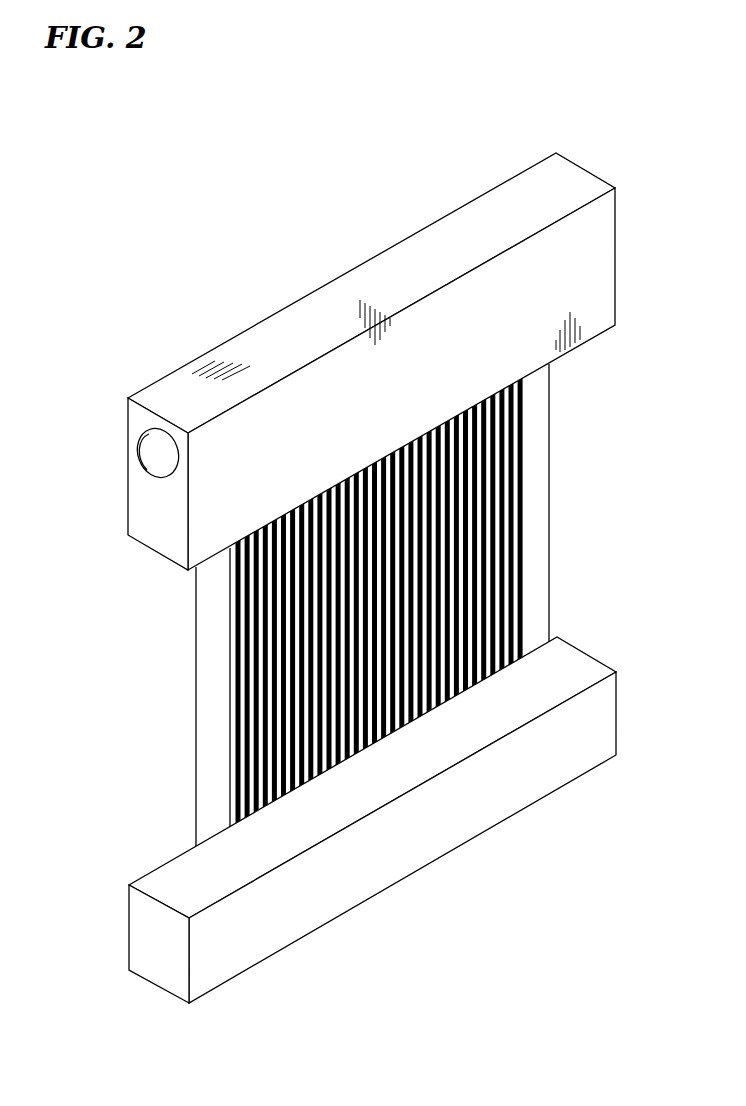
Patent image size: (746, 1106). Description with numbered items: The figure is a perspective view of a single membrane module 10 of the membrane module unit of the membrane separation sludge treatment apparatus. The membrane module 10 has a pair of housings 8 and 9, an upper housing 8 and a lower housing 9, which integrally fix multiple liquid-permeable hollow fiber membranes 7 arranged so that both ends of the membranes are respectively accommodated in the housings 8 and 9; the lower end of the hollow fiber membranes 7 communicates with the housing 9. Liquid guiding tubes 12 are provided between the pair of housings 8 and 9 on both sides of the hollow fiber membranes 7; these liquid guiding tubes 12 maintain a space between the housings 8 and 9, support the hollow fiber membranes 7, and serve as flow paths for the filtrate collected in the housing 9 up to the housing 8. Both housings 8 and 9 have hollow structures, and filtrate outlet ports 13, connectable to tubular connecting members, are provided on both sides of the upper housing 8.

The membrane module 10 is at (614, 134).
The housing 8 is at (605, 263).
The housing 9 is at (605, 722).
The liquid guiding tube 12 is at (200, 717).
The hollow fiber membrane 7 is at (457, 593).
The filtrate outlet port 13 is at (150, 462).